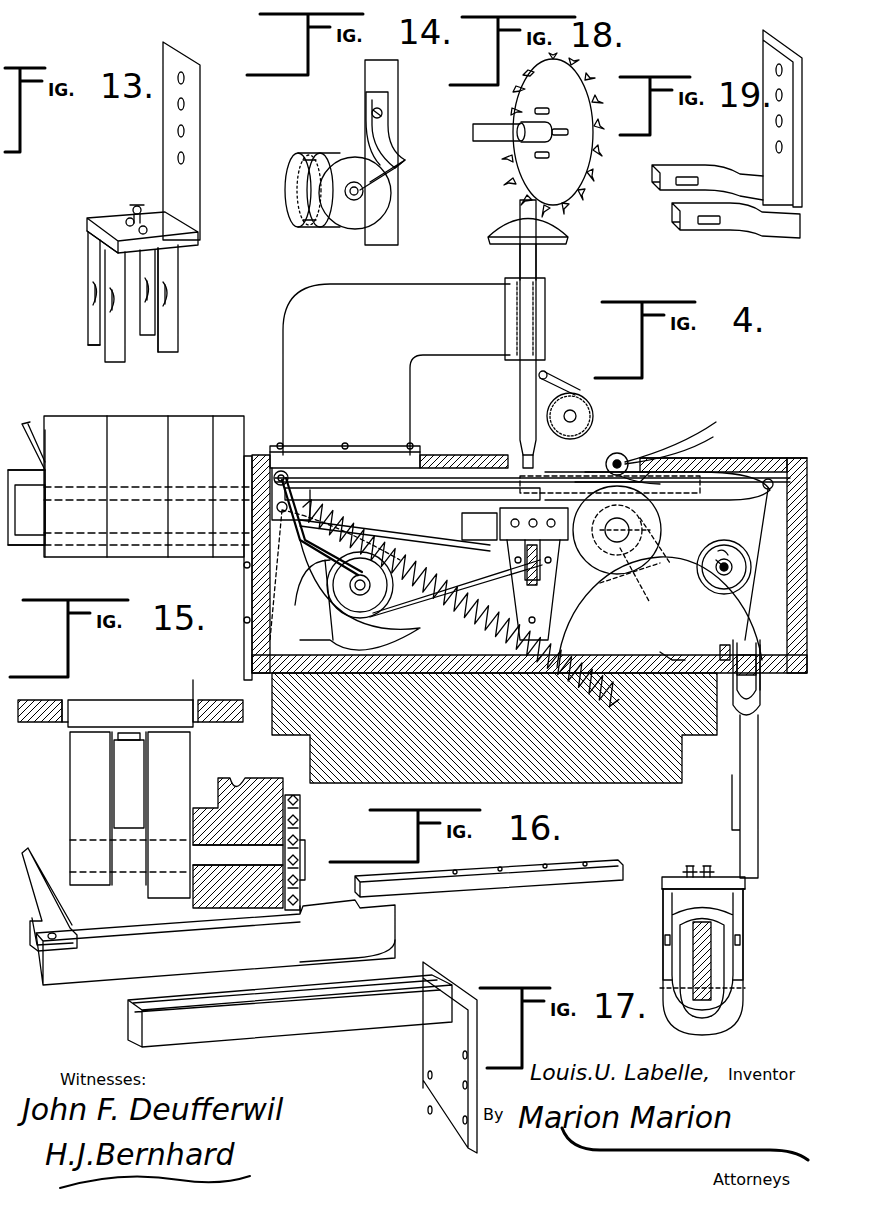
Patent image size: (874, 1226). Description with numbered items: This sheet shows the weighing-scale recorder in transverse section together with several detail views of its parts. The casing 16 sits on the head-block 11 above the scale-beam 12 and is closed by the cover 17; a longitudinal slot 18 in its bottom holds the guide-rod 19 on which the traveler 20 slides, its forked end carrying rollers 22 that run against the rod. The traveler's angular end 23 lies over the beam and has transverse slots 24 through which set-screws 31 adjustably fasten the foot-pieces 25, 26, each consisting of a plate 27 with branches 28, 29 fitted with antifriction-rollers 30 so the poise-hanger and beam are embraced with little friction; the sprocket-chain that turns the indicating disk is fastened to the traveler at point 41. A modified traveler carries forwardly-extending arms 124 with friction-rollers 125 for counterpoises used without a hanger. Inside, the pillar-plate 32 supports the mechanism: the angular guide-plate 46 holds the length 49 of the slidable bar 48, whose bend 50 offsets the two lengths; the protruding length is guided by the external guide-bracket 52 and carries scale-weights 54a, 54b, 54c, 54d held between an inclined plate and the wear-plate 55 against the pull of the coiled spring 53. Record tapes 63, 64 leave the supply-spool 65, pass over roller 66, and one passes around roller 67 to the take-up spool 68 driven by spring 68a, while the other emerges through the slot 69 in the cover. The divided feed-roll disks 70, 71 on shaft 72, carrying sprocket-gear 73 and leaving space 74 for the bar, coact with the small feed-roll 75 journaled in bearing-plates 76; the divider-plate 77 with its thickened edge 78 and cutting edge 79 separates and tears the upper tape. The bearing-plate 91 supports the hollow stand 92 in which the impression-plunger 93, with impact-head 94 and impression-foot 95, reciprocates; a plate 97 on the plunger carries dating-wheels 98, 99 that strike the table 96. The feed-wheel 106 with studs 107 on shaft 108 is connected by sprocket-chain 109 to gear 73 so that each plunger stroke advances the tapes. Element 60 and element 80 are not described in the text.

In FIG. 4, the head-block 11 is at (640, 770).
In FIG. 4, the scale-beam 12 is at (705, 988).
In FIG. 4, the casing 16 is at (804, 569).
In FIG. 4, the cover 17 is at (760, 458).
In FIG. 15, the cover 17 is at (30, 725).
In FIG. 4, the longitudinal slot 18 is at (762, 690).
In FIG. 4, the guide-rod 19 is at (760, 705).
In FIG. 13, the traveler 20 is at (200, 152).
In FIG. 19, the traveler 20 is at (800, 117).
In FIG. 4, the traveler 20 is at (758, 805).
In FIG. 4, the rollers 22 is at (742, 645).
In FIG. 13, the angular end 23 is at (98, 218).
In FIG. 4, the angular end 23 is at (672, 877).
In FIG. 13, the transverse slots 24 is at (130, 218).
In FIG. 13, the foot-piece 25 is at (90, 262).
In FIG. 13, the foot-piece 26 is at (178, 290).
In FIG. 4, the foot-piece 26 is at (745, 915).
In FIG. 13, the plate 27 is at (87, 226).
In FIG. 4, the plate 27 is at (748, 884).
In FIG. 13, the branch 28 is at (90, 322).
In FIG. 4, the branch 28 is at (672, 966).
In FIG. 13, the branch 29 is at (148, 333).
In FIG. 4, the branch 29 is at (735, 966).
In FIG. 13, the antifriction-rollers 30 is at (110, 300).
In FIG. 4, the antifriction-rollers 30 is at (665, 941).
In FIG. 13, the set-screws 31 is at (141, 205).
In FIG. 4, the set-screws 31 is at (698, 866).
In FIG. 4, the pillar-plate 32 is at (684, 555).
In FIG. 15, the pillar-plate 32 is at (250, 790).
In FIG. 4, the point of chain attachment 41 is at (722, 652).
In FIG. 4, the guide-plate 46 is at (500, 530).
In FIG. 4, the slidable bar 48 is at (26, 482).
In FIG. 15, the slidable bar 48 is at (208, 916).
In FIG. 4, the length of slidable bar 49 is at (470, 520).
In FIG. 15, the length of slidable bar 49 is at (126, 806).
In FIG. 16, the length of slidable bar 49 is at (528, 896).
In FIG. 4, the bend or offset 50 is at (296, 496).
In FIG. 15, the bend or offset 50 is at (397, 945).
In FIG. 4, the guide-bracket 52 is at (32, 545).
In FIG. 17, the guide-bracket 52 is at (322, 1027).
In FIG. 4, the coiled spring 53 is at (620, 640).
In FIG. 4, the scale-weight 54a is at (74, 430).
In FIG. 4, the scale-weight 54b is at (128, 428).
In FIG. 4, the scale-weight 54c is at (185, 425).
In FIG. 4, the scale-weight 54d is at (230, 428).
In FIG. 4, the wear-plate 55 is at (250, 594).
In FIG. 17, the wear-plate 55 is at (437, 1108).
In FIG. 4, the rod 60 is at (560, 580).
In FIG. 4, the record tape or ribbon 63 is at (693, 428).
In FIG. 4, the record tape or ribbon 64 is at (725, 479).
In FIG. 4, the supply-spool 65 is at (378, 598).
In FIG. 4, the roller 66 is at (290, 470).
In FIG. 4, the roller 67 is at (774, 478).
In FIG. 4, the take-up spool 68 is at (730, 555).
In FIG. 4, the coiled spring 68a is at (716, 558).
In FIG. 4, the slot 69 is at (600, 465).
In FIG. 15, the slot 69 is at (193, 698).
In FIG. 15, the feed-roll member or disk 70 is at (169, 815).
In FIG. 4, the feed-roll member or disk 71 is at (655, 515).
In FIG. 15, the feed-roll member or disk 71 is at (90, 808).
In FIG. 4, the horizontal shaft 72 is at (630, 530).
In FIG. 15, the horizontal shaft 72 is at (302, 888).
In FIG. 4, the sprocket-gear 73 is at (633, 572).
In FIG. 15, the sprocket-gear 73 is at (301, 815).
In FIG. 15, the intermediate space 74 is at (148, 752).
In FIG. 15, the feed-roll 75 is at (135, 710).
In FIG. 15, the bearing-plates 76 is at (65, 708).
In FIG. 4, the divider-plate 77 is at (680, 452).
In FIG. 4, the thickened edge 78 is at (650, 484).
In FIG. 4, the cutting edge 79 is at (700, 431).
In FIG. 4, the slide 80 is at (460, 482).
In FIG. 4, the bearing-plate 91 is at (402, 455).
In FIG. 4, the hollow stand 92 is at (283, 327).
In FIG. 14, the impression-plunger 93 is at (398, 212).
In FIG. 18, the impression-plunger 93 is at (536, 260).
In FIG. 4, the impression-plunger 93 is at (537, 262).
In FIG. 18, the impact-head 94 is at (500, 236).
In FIG. 4, the impression-foot 95 is at (525, 445).
In FIG. 4, the table 96 is at (596, 458).
In FIG. 14, the plate 97 is at (385, 145).
In FIG. 4, the plate 97 is at (550, 372).
In FIG. 14, the impression-wheel 98 is at (352, 222).
In FIG. 14, the impression-wheel 99 is at (290, 198).
In FIG. 4, the impression-wheel 99 is at (590, 407).
In FIG. 18, the feed-wheel 106 is at (590, 178).
In FIG. 4, the feed-wheel 106 is at (375, 620).
In FIG. 18, the pins or studs 107 is at (542, 108).
In FIG. 18, the shaft 108 is at (497, 140).
In FIG. 4, the endless sprocket-chain 109 is at (452, 605).
In FIG. 19, the forwardly-extending arms 124 is at (712, 159).
In FIG. 19, the friction-rollers 125 is at (678, 184).